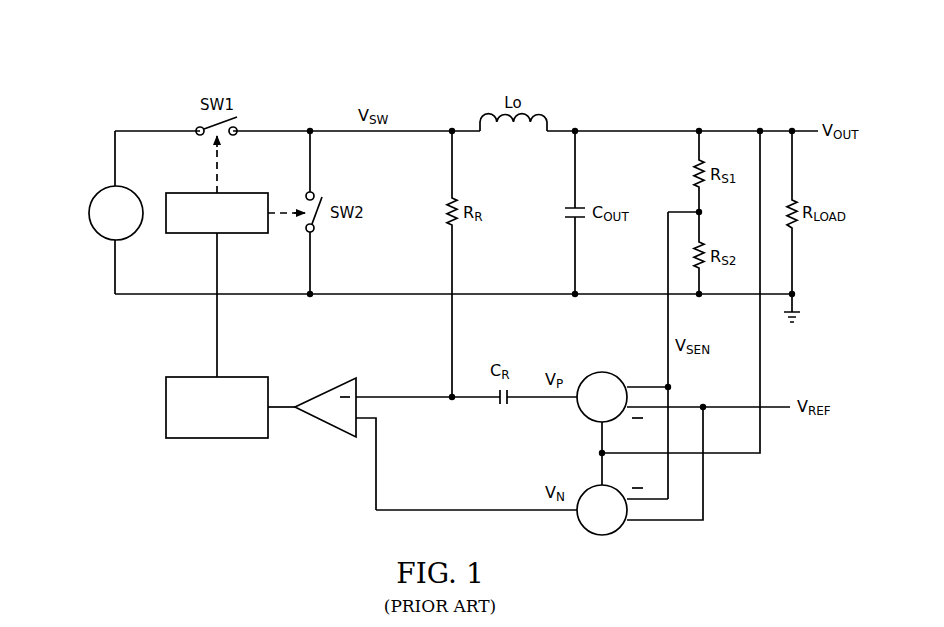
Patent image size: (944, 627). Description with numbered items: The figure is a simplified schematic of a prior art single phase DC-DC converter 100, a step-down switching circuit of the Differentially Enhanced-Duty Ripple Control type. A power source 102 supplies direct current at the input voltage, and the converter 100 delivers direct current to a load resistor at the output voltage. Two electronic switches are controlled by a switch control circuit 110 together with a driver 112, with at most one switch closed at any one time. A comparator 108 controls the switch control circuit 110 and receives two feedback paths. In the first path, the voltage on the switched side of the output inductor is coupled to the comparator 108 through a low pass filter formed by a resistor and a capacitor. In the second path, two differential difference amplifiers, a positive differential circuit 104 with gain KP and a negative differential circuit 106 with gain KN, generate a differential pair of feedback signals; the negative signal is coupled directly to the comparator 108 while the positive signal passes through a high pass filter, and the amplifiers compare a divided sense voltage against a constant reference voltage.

The DC-DC converter 100 is at (637, 74).
The power source 102 is at (89, 213).
The positive differential circuit 104 is at (601, 372).
The negative differential circuit 106 is at (602, 536).
The comparator 108 is at (318, 424).
The switch control circuit 110 is at (166, 410).
The driver 112 is at (197, 236).